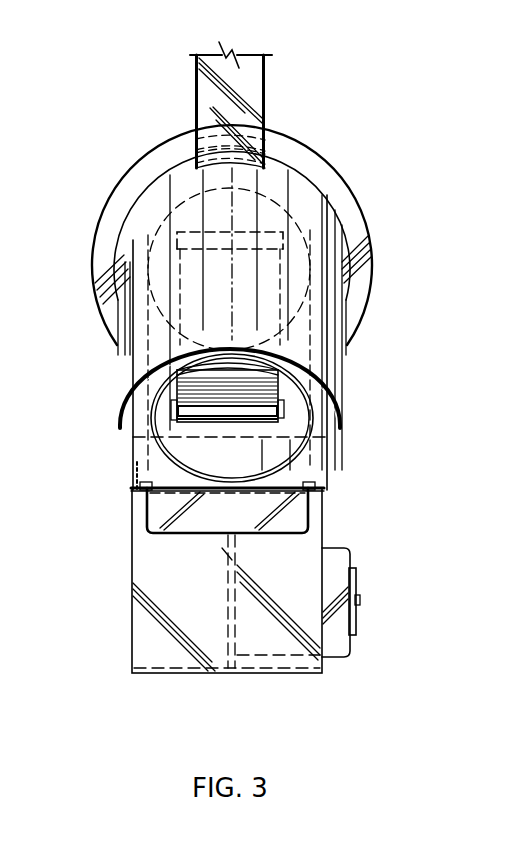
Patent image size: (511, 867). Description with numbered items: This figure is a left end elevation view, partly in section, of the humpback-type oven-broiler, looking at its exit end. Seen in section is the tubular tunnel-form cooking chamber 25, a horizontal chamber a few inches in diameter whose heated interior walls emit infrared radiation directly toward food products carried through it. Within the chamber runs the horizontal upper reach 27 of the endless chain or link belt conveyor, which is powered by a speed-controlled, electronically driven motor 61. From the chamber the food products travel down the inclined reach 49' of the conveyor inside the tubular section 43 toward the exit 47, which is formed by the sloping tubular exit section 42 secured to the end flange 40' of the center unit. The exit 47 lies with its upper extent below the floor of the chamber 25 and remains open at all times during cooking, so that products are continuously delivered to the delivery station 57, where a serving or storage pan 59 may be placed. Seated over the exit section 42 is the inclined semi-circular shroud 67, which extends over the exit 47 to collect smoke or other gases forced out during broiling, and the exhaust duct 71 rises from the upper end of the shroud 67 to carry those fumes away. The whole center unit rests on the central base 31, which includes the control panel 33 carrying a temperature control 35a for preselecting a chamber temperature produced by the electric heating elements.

The exhaust duct 71 is at (265, 80).
The end flange 40' is at (255, 232).
The tunnel-form cooking chamber 25 is at (297, 220).
The semi-circular shroud 67 is at (325, 197).
The upper reach of conveyor 27 is at (205, 228).
The inclined reach of conveyor 49' is at (170, 350).
The tubular section 43 is at (142, 450).
The exit section 42 is at (300, 476).
The exit 47 is at (290, 458).
The delivery station 57 is at (342, 443).
The serving or storage pan 59 is at (309, 512).
The motor 61 is at (132, 480).
The central base 31 is at (323, 535).
The control panel 33 is at (350, 554).
The temperature control 35a is at (357, 580).